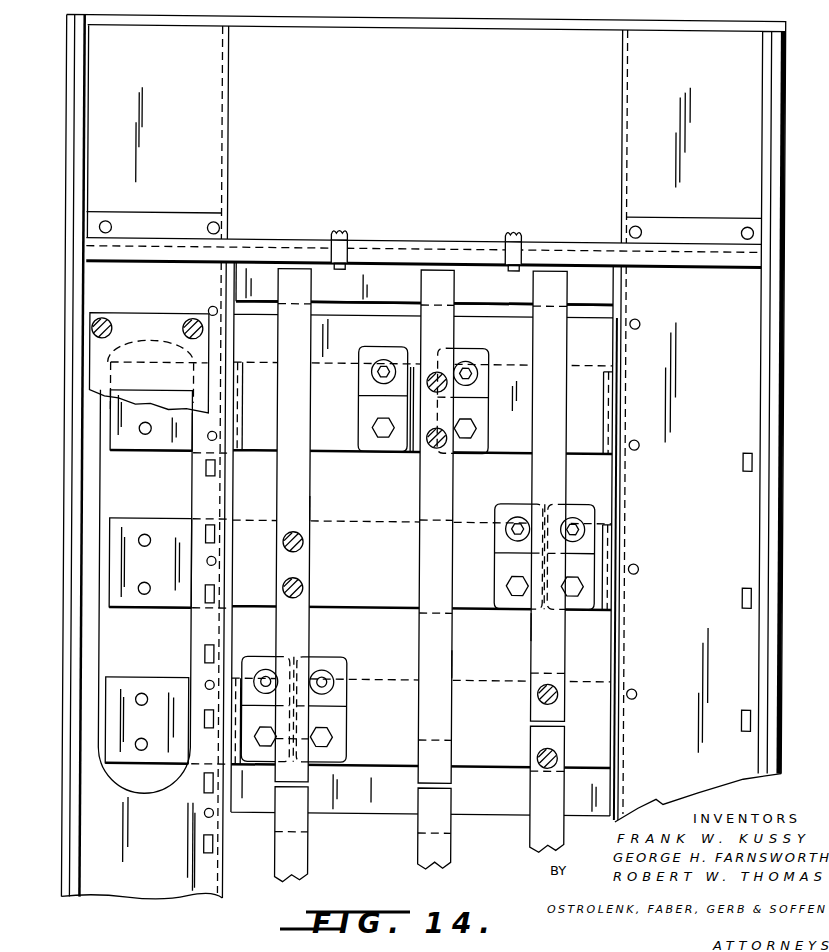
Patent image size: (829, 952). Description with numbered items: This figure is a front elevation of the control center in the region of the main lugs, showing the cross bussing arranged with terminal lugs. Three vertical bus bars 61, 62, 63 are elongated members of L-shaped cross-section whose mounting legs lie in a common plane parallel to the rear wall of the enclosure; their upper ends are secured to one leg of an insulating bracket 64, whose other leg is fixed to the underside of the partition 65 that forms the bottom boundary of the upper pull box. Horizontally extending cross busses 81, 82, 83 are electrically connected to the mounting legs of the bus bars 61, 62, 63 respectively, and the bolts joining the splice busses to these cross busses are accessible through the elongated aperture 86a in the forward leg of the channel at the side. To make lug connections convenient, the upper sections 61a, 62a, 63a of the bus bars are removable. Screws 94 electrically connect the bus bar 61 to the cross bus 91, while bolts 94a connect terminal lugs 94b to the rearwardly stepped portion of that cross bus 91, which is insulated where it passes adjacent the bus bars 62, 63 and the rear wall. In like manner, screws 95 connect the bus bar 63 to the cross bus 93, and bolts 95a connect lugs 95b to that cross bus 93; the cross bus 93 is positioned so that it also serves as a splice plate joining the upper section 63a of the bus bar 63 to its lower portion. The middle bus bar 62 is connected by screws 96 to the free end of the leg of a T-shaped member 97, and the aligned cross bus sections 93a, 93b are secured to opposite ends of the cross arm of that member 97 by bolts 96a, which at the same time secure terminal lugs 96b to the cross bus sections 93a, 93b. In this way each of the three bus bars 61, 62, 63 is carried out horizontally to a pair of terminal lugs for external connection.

The bus bar 61 is at (277, 853).
The bus bar 62 is at (454, 808).
The bus bar 63 is at (532, 829).
The upper section of bus bar 61 61a is at (312, 509).
The upper section of bus bar 62 62a is at (454, 667).
The upper section of bus bar 63 63a is at (533, 625).
The insulating bracket 64 is at (399, 275).
The partition 65 is at (385, 241).
The cross bus 81 is at (167, 521).
The cross bus 82 is at (177, 453).
The cross bus 83 is at (163, 663).
The elongated aperture 86a is at (100, 498).
The cross bus 91 is at (262, 507).
The cross bus 93 is at (236, 673).
The cross bus section 93a is at (243, 372).
The cross bus section 93b is at (603, 377).
The screws 94 is at (305, 587).
The bolts 94a is at (507, 586).
The terminal lugs 94b is at (522, 492).
The screws 95 is at (535, 695).
The bolts 95a is at (335, 740).
The lugs 95b is at (343, 660).
The screws 96 is at (438, 446).
The bolts 96a is at (372, 436).
The terminal lugs 96b is at (394, 341).
The T-shaped member 97 is at (415, 440).